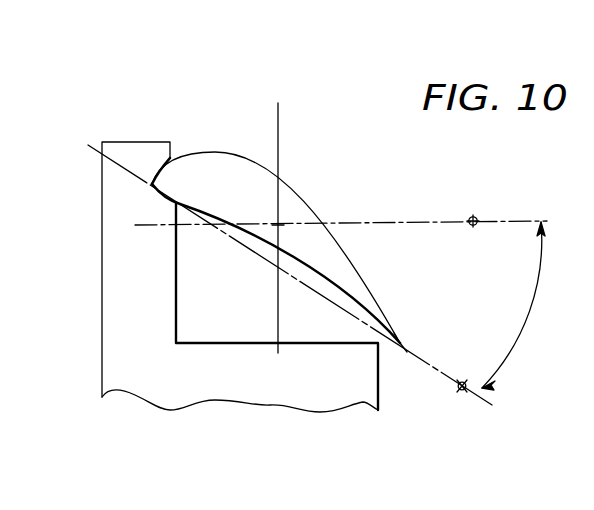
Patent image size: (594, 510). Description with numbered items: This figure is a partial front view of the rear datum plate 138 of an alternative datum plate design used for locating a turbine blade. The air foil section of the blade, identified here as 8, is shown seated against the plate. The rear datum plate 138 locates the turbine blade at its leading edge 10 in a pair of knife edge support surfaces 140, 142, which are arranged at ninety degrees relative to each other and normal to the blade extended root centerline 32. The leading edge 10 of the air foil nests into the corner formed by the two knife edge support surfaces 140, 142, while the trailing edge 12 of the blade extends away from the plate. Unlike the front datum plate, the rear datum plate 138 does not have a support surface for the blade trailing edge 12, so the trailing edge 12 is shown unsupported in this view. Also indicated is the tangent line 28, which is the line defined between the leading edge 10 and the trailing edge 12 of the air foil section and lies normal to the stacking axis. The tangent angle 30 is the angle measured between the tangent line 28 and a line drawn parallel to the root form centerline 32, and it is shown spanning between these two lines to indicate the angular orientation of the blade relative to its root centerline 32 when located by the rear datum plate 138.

The airfoil blade 8 is at (297, 213).
The leading edge 10 is at (150, 186).
The trailing edge 12 is at (402, 341).
The tangent line 28 is at (462, 392).
The tangent angle 30 is at (527, 307).
The root form centerline 32 is at (508, 220).
The rear datum plate 138 is at (273, 388).
The knife edge support surface 140 is at (168, 198).
The knife edge support surface 142 is at (167, 160).